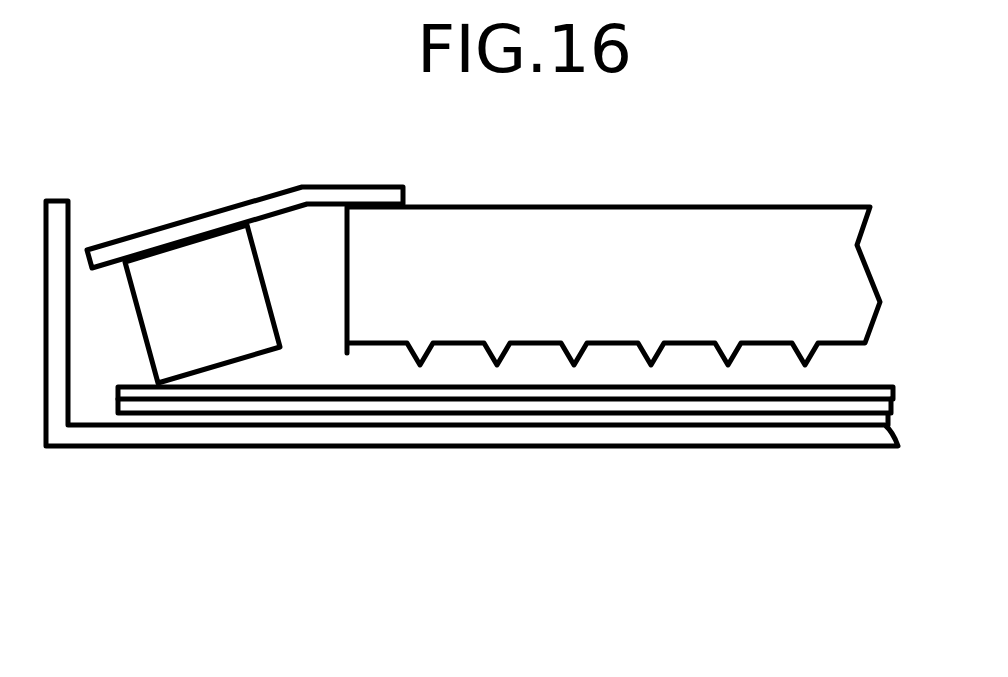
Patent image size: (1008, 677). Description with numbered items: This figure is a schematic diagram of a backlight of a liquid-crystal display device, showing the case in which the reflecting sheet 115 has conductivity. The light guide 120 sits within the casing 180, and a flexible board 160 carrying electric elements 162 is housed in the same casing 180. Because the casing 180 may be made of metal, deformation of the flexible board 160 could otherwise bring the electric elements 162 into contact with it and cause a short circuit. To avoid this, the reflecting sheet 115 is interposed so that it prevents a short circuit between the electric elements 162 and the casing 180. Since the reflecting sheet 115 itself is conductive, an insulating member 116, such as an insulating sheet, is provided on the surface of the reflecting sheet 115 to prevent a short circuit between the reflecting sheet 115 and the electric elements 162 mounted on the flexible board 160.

The light guide 120 is at (745, 210).
The flexible board 160 is at (256, 203).
The electric elements 162 is at (183, 382).
The insulating member 116 is at (317, 398).
The reflecting sheet 115 is at (816, 398).
The casing 180 is at (638, 432).